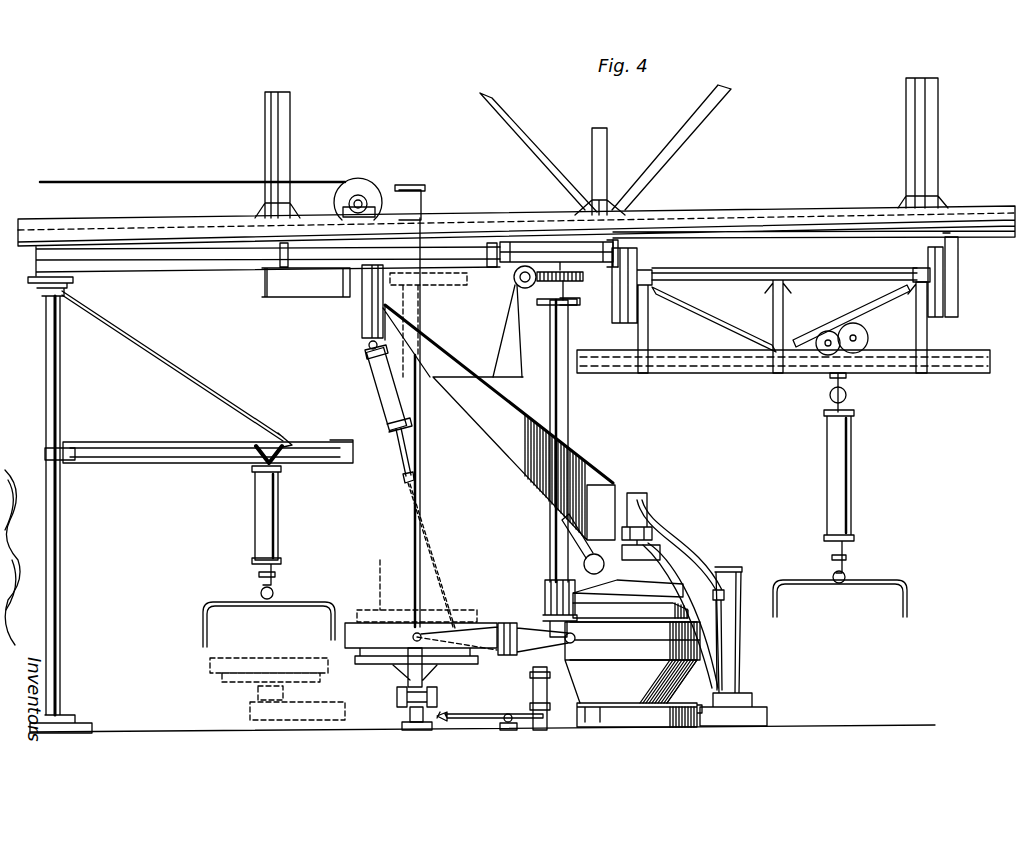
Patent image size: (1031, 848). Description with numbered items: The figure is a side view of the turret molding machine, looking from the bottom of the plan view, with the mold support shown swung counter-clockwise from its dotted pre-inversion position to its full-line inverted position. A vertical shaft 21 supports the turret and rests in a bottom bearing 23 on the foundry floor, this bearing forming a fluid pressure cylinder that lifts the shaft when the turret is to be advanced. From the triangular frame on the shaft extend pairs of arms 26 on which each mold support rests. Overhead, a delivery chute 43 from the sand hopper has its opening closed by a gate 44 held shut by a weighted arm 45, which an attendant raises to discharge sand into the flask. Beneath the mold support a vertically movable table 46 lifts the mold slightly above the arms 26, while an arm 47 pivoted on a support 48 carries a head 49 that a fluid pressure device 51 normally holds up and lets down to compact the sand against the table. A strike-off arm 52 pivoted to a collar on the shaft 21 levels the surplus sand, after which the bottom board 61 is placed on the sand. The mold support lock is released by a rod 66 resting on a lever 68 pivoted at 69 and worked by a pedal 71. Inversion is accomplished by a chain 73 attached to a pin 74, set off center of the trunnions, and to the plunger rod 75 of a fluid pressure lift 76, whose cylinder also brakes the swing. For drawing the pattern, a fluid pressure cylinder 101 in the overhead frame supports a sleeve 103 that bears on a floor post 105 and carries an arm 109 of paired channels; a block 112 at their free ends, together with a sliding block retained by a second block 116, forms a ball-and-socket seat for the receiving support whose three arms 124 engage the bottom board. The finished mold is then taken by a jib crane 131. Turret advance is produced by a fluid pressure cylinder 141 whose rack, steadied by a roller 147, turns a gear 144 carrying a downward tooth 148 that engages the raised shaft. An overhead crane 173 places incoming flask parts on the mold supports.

The vertical shaft 21 is at (570, 397).
The bottom bearing 23 is at (553, 722).
The arms 26 is at (527, 647).
The delivery chute 43 is at (523, 463).
The gate 44 is at (632, 523).
The weighted arm 45 is at (586, 560).
The vertically movable table 46 is at (650, 643).
The arm 47 is at (677, 560).
The support 48 is at (738, 630).
The head 49 is at (618, 584).
The fluid pressure device 51 is at (648, 510).
The strike-off arm 52 is at (545, 605).
The bottom board 61 is at (447, 620).
The rod 66 is at (533, 689).
The lever 68 is at (490, 716).
The pivot 69 is at (509, 727).
The pedal 71 is at (441, 714).
The chain 73 is at (430, 552).
The pin 74 is at (355, 657).
The plunger rod 75 is at (398, 462).
The fluid pressure lift 76 is at (385, 382).
The fluid pressure cylinder 101 is at (422, 197).
The sleeve 103 is at (421, 466).
The post 105 is at (408, 724).
The arm 109 is at (405, 695).
The block 112 is at (356, 180).
The second block 116 is at (512, 283).
The arms 124 is at (425, 655).
The jib crane 131 is at (263, 508).
The fluid pressure cylinder 141 is at (317, 285).
The gear 144 is at (587, 277).
The roller 147 is at (515, 290).
The tooth 148 is at (545, 292).
The overhead crane 173 is at (825, 330).